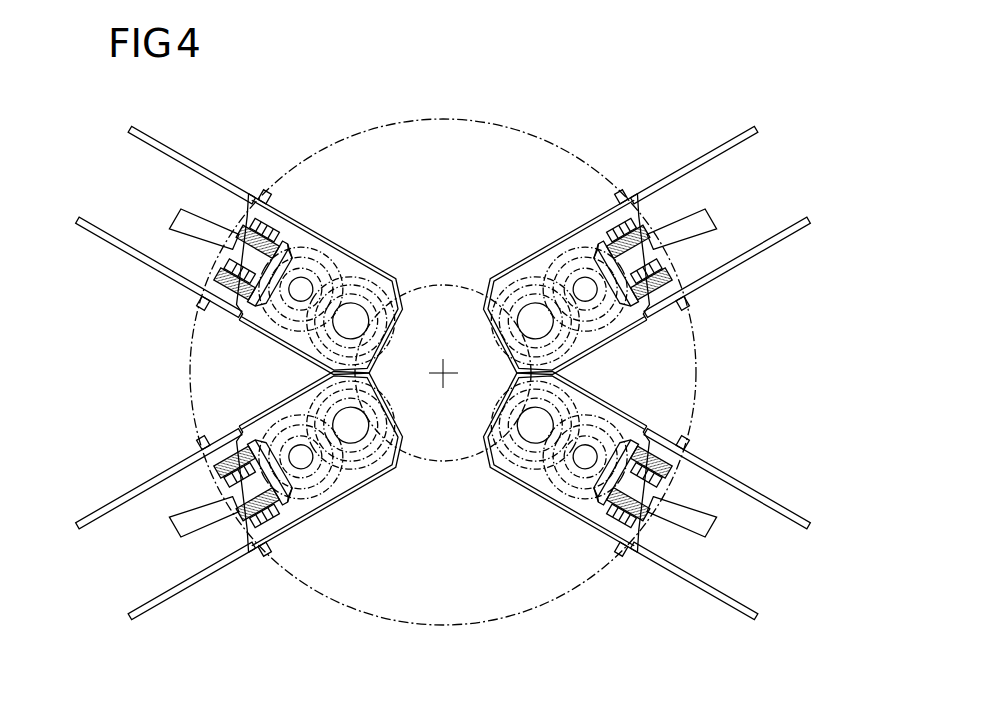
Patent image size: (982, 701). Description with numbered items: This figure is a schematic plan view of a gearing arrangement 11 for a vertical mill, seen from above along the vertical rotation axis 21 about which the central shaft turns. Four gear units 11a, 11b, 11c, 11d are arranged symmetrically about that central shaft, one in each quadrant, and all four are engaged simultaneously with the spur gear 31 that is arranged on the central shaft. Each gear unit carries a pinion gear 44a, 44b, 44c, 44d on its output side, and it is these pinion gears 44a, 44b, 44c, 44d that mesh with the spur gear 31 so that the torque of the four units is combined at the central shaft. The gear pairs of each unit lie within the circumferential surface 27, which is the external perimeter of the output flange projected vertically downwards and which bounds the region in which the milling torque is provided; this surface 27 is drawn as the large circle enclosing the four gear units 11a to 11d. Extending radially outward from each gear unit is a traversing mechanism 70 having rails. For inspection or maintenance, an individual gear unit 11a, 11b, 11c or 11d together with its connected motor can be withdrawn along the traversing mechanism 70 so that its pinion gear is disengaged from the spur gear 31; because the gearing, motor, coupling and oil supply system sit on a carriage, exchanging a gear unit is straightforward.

The gearing arrangement 11 is at (490, 113).
The gear unit 11a is at (578, 524).
The gear unit 11b is at (578, 222).
The gear unit 11c is at (308, 222).
The gear unit 11d is at (308, 524).
The pinion gear 44a is at (530, 450).
The pinion gear 44b is at (530, 296).
The pinion gear 44c is at (360, 296).
The pinion gear 44d is at (360, 450).
The traversing mechanism 70 is at (183, 153).
The vertical rotation axis 21 is at (447, 383).
The circumferential surface 27 is at (428, 626).
The spur gear 31 is at (450, 287).